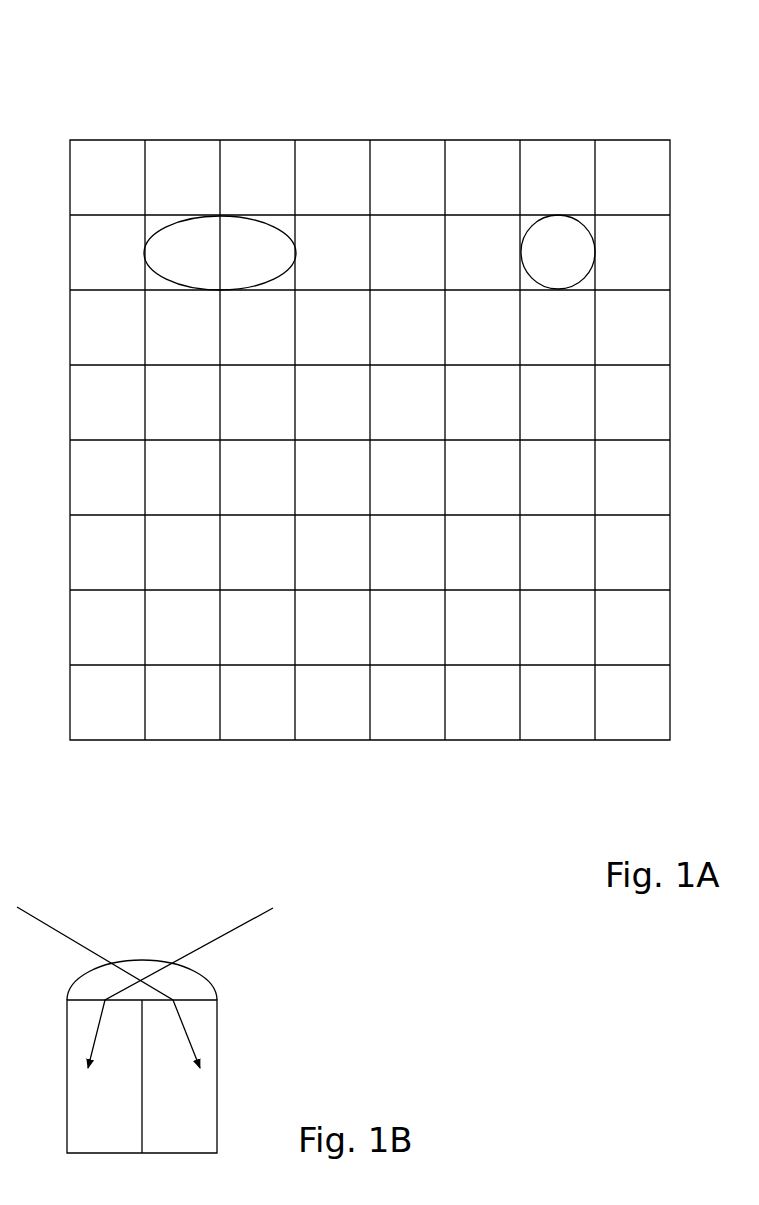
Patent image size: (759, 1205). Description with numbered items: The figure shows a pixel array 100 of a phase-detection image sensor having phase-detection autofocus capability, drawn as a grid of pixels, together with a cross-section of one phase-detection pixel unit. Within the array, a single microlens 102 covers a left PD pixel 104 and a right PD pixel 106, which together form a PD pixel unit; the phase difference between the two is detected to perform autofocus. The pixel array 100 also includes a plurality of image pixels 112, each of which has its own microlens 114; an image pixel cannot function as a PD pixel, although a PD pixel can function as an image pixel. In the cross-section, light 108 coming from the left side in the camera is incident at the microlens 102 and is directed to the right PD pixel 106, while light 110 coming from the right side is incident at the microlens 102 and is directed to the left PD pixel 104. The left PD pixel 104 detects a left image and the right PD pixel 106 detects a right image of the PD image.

In FIG. 1A, the pixel array 100 is at (140, 64).
In FIG. 1A, the microlens 102 is at (284, 222).
In FIG. 1B, the microlens 102 is at (208, 985).
In FIG. 1A, the left PD pixel 104 is at (204, 266).
In FIG. 1B, the left PD pixel 104 is at (128, 1127).
In FIG. 1A, the right PD pixel 106 is at (276, 266).
In FIG. 1B, the right PD pixel 106 is at (199, 1127).
In FIG. 1B, the light 108 is at (50, 922).
In FIG. 1B, the light 110 is at (247, 923).
In FIG. 1A, the image pixel 112 is at (580, 266).
In FIG. 1A, the microlens 114 is at (586, 222).